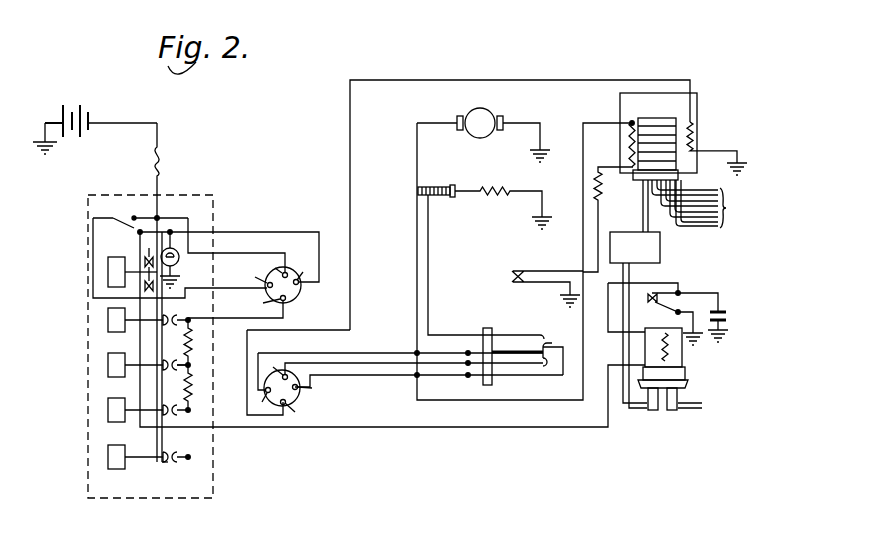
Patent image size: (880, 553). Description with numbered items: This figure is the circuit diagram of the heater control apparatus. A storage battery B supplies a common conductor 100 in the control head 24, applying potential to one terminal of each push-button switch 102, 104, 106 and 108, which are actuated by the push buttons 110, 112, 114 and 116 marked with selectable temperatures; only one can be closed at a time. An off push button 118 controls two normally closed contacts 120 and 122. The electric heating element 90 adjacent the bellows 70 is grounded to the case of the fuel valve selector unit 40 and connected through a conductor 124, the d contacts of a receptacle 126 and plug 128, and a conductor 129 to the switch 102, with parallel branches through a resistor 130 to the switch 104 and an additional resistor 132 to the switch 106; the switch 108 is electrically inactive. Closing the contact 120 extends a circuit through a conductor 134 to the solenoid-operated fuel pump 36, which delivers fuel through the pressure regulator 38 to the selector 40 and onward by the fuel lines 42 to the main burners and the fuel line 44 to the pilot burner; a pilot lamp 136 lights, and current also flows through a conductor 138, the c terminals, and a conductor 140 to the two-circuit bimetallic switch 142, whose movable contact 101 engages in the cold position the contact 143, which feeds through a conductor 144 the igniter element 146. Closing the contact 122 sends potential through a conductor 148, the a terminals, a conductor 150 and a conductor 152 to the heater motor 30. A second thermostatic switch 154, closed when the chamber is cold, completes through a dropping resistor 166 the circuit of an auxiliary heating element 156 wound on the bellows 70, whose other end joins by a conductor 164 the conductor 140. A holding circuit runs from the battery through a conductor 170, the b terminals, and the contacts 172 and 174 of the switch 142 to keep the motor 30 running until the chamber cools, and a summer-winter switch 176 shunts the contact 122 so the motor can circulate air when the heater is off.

The storage battery B is at (73, 103).
The control head 24 is at (80, 207).
The heater motor 30 is at (486, 106).
The solenoid-operated fuel pump 36 is at (682, 358).
The pressure regulator 38 is at (660, 258).
The fuel valve selector unit 40 is at (633, 191).
The fuel lines 42 is at (694, 197).
The fuel line 44 is at (700, 214).
The bellows 70 is at (672, 123).
The electric heating element 90 is at (694, 136).
The common conductor 100 is at (155, 387).
The contact arm 101 is at (549, 345).
The push-button switch 102 is at (175, 313).
The push-button switch 104 is at (180, 363).
The push-button switch 106 is at (170, 417).
The push-button switch 108 is at (168, 462).
The push button 110 is at (107, 320).
The push button 112 is at (107, 365).
The push button 114 is at (107, 410).
The push button 116 is at (107, 455).
The off push button 118 is at (106, 268).
The contact 120 is at (149, 250).
The contact 122 is at (143, 286).
The conductor 124 is at (349, 82).
The receptacle 126 is at (298, 402).
The plug 128 is at (297, 297).
The conductor 129 is at (236, 322).
The resistor 130 is at (189, 330).
The additional resistor 132 is at (189, 395).
The conductor 134 is at (412, 430).
The pilot lamp 136 is at (178, 262).
The conductor 138 is at (293, 231).
The conductor 140 is at (392, 377).
The two-circuit bimetallic switch 142 is at (504, 326).
The contact 143 is at (540, 338).
The conductor 144 is at (430, 237).
The igniter element 146 is at (492, 184).
The conductor 148 is at (227, 287).
The conductor 150 is at (378, 353).
The conductor 152 is at (417, 188).
The second thermostatic switch 154 is at (536, 264).
The auxiliary heating element 156 is at (630, 131).
The conductor 164 is at (490, 400).
The dropping resistor 166 is at (597, 178).
The conductor 170 is at (258, 252).
The contact 172 is at (564, 357).
The contact 174 is at (547, 372).
The summer-winter switch 176 is at (124, 213).